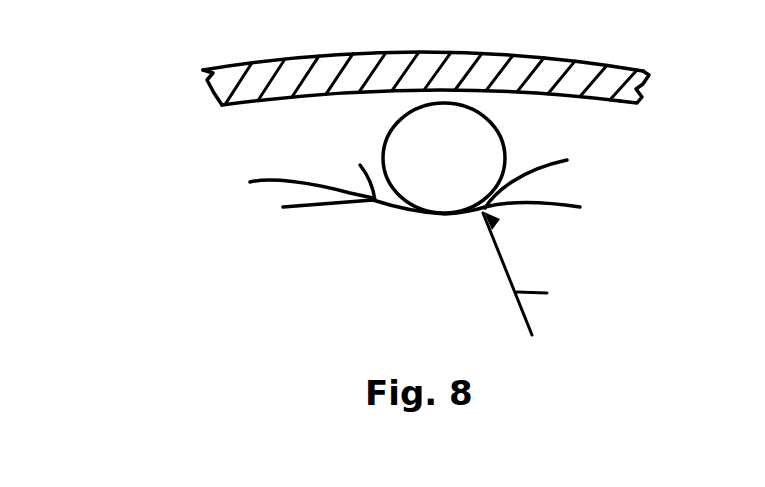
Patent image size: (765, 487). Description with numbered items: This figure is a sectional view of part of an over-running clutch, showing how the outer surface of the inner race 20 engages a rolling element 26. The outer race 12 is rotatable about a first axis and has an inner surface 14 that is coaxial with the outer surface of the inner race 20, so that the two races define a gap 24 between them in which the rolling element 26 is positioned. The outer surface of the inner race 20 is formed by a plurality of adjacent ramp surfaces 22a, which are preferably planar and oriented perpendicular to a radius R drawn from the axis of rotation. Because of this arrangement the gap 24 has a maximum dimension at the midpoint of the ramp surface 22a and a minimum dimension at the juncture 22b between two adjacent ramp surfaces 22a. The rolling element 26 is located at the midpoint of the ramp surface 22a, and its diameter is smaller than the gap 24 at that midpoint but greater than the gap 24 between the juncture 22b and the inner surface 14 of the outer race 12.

The outer race 12 is at (525, 75).
The inner surface 14 is at (623, 103).
The inner race 20 is at (375, 222).
The ramp surface 22a is at (464, 174).
The juncture 22b is at (278, 181).
The gap 24 is at (240, 133).
The rolling element 26 is at (400, 127).
The radius R is at (529, 273).